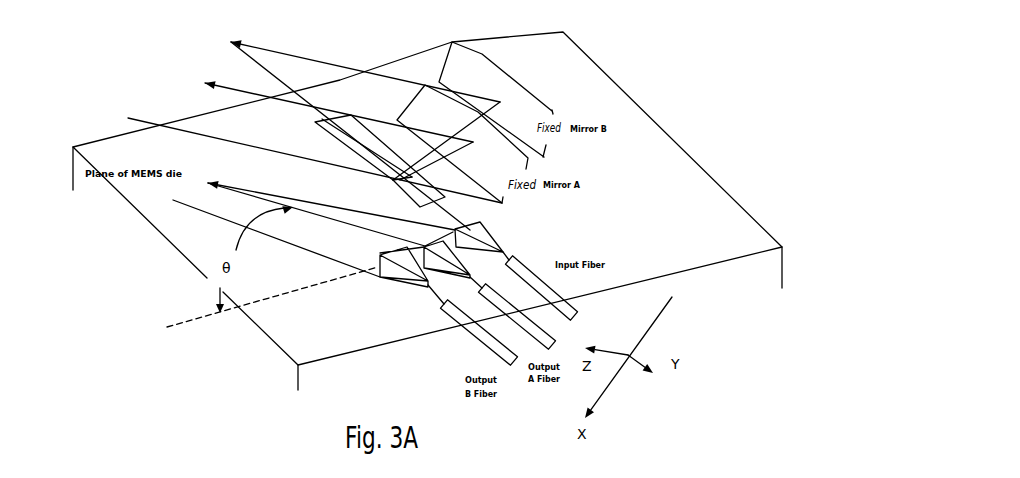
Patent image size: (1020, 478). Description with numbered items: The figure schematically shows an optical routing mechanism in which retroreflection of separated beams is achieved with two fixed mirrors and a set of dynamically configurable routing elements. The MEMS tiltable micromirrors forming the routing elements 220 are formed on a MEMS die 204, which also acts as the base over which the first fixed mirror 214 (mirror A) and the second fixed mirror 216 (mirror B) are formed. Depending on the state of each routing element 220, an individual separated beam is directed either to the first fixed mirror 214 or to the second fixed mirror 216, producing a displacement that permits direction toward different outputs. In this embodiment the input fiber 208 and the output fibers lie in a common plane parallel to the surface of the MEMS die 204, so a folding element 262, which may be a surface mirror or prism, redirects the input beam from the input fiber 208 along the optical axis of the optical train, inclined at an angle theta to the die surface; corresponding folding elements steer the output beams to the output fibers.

The MEMS die 204 is at (749, 224).
The second fixed mirror 216 is at (545, 102).
The first fixed mirror 214 is at (527, 167).
The dynamically configurable routing element 220 is at (335, 123).
The folding element 262 is at (481, 234).
The input fiber 208 is at (582, 307).